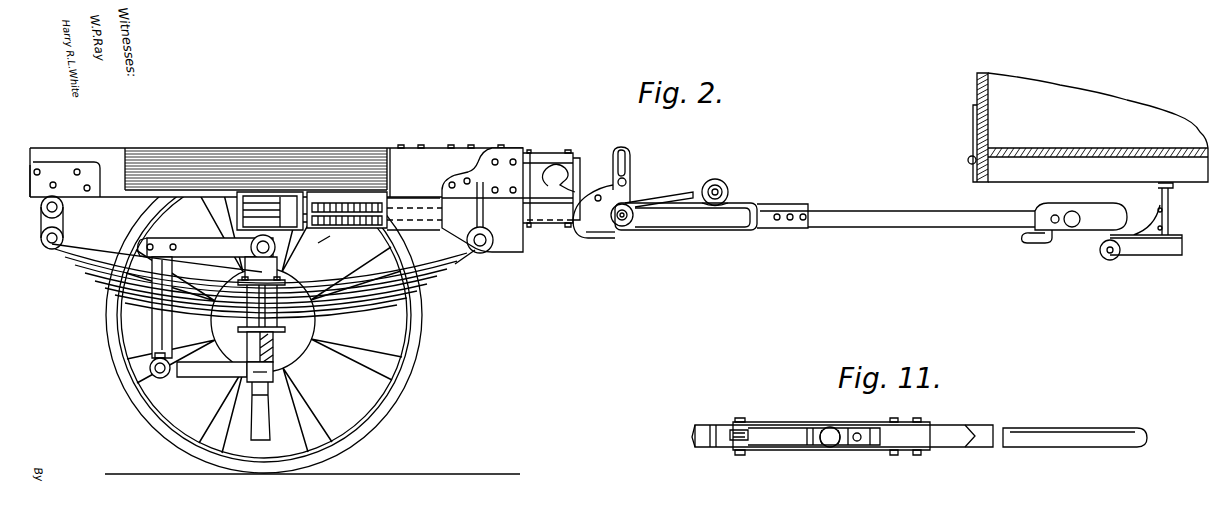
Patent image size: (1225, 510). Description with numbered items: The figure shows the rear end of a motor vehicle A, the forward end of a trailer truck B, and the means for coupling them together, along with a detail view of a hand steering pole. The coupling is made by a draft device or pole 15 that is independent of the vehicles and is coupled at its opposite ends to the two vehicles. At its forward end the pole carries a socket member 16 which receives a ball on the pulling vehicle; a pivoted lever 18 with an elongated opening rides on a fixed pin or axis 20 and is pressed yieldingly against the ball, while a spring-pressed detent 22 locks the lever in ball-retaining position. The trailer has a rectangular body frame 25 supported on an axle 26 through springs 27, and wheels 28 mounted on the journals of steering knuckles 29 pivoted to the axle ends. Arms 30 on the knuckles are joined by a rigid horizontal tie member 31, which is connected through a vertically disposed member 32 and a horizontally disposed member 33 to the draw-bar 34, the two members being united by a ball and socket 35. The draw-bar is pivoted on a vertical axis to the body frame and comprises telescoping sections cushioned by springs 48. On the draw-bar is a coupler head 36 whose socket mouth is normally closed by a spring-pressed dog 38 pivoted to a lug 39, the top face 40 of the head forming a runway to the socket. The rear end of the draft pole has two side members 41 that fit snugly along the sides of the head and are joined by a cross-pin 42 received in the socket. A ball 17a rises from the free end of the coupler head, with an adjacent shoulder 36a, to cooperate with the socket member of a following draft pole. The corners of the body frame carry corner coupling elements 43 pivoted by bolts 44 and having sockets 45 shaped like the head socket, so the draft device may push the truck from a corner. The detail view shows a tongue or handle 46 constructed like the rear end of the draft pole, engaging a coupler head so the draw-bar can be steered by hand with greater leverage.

In FIG. 2, the traction unit or power vehicle A is at (1000, 131).
In FIG. 2, the trailer truck B is at (276, 161).
In FIG. 2, the draft device or pole 15 is at (847, 213).
In FIG. 2, the socket member 16 is at (1097, 235).
In FIG. 2, the ball 17a is at (729, 192).
In FIG. 11, the ball 17a is at (835, 448).
In FIG. 2, the pivoted lever 18 is at (1040, 244).
In FIG. 2, the fixed pin or axis 20 is at (1078, 214).
In FIG. 2, the spring-pressed detent 22 is at (1056, 214).
In FIG. 2, the body frame 25 is at (240, 200).
In FIG. 2, the axle 26 is at (278, 365).
In FIG. 2, the springs 27 is at (445, 266).
In FIG. 2, the wheels 28 is at (372, 420).
In FIG. 2, the steering knuckles 29 is at (250, 395).
In FIG. 2, the arms 30 is at (205, 377).
In FIG. 2, the tie member 31 is at (345, 196).
In FIG. 2, the vertically disposed member 32 is at (152, 335).
In FIG. 2, the horizontally disposed member 33 is at (187, 242).
In FIG. 2, the draw-bar 34 is at (585, 232).
In FIG. 11, the draw-bar 34 is at (697, 447).
In FIG. 2, the ball and socket 35 is at (147, 243).
In FIG. 2, the coupler head 36 is at (676, 231).
In FIG. 11, the coupler head 36 is at (792, 448).
In FIG. 2, the shoulder 36a is at (703, 190).
In FIG. 2, the spring-pressed dog 38 is at (630, 165).
In FIG. 11, the spring-pressed dog 38 is at (742, 434).
In FIG. 2, the lug 39 is at (627, 184).
In FIG. 2, the top face 40 is at (666, 200).
In FIG. 2, the side members 41 is at (722, 231).
In FIG. 2, the cross-pin 42 is at (622, 227).
In FIG. 2, the corner coupling elements 43 is at (566, 175).
In FIG. 2, the bolts 44 is at (535, 152).
In FIG. 2, the sockets 45 is at (547, 170).
In FIG. 11, the tongue or handle 46 is at (982, 436).
In FIG. 2, the springs 48 is at (328, 243).